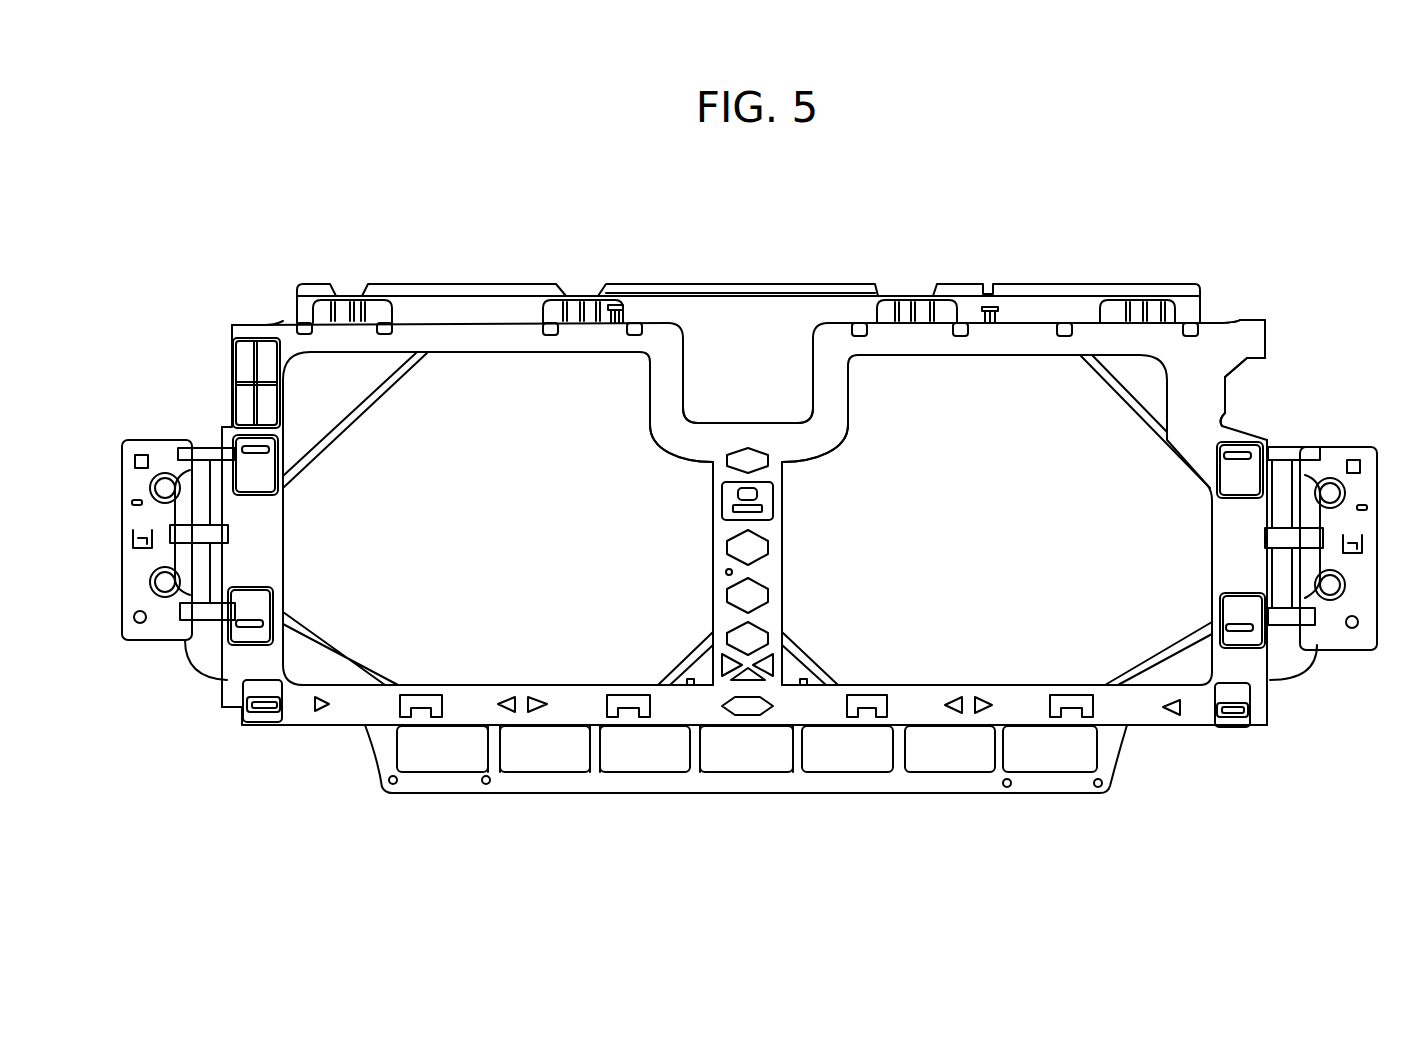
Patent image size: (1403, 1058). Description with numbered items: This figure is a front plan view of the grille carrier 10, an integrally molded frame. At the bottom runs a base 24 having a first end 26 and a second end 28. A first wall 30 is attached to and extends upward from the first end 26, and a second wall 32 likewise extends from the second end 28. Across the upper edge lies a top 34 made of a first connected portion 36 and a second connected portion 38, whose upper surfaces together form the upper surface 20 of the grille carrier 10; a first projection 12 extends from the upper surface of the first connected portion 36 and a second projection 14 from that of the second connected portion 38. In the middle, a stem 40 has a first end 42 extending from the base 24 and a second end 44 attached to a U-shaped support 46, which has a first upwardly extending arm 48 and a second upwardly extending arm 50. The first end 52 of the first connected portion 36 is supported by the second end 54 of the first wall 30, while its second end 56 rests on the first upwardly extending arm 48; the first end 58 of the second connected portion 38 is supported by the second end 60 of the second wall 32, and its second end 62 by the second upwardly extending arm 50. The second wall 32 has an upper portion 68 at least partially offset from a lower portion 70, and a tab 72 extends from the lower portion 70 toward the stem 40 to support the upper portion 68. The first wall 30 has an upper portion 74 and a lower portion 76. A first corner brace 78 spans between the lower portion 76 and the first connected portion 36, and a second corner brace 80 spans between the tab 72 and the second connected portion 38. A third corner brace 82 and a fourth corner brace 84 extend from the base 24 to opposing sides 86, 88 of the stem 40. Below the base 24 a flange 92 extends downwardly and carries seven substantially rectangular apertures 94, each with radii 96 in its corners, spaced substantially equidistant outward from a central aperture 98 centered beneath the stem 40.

The grille carrier 10 is at (235, 305).
The first projection 12 is at (613, 305).
The second projection 14 is at (990, 307).
The upper surface 20 is at (420, 283).
The base 24 is at (332, 725).
The first end 26 is at (270, 725).
The second end 28 is at (1212, 725).
The first wall 30 is at (288, 545).
The second wall 32 is at (1207, 556).
The top 34 is at (755, 284).
The first connected portion 36 is at (458, 320).
The second connected portion 38 is at (1030, 320).
The stem 40 is at (713, 535).
The first end 42 is at (790, 655).
The second end 44 is at (785, 480).
The U-shaped support 46 is at (652, 427).
The first upwardly extending arm 48 is at (695, 383).
The second upwardly extending arm 50 is at (848, 410).
The first end 52 is at (280, 320).
The second end 54 is at (233, 350).
The second end 56 is at (630, 360).
The first end 58 is at (1218, 325).
The second end 60 is at (1220, 358).
The second end 62 is at (870, 360).
The upper portion 68 is at (1230, 403).
The lower portion 70 is at (1210, 583).
The tab 72 is at (1175, 455).
The upper portion 74 is at (233, 385).
The lower portion 76 is at (283, 618).
The first corner brace 78 is at (370, 408).
The second corner brace 80 is at (1110, 385).
The third corner brace 82 is at (682, 668).
The fourth corner brace 84 is at (833, 662).
The opposing side 86 is at (713, 632).
The opposing side 88 is at (790, 640).
The flange 92 is at (795, 793).
The substantially rectangular apertures 94 is at (535, 772).
The radii 96 is at (500, 775).
The central aperture 98 is at (738, 773).